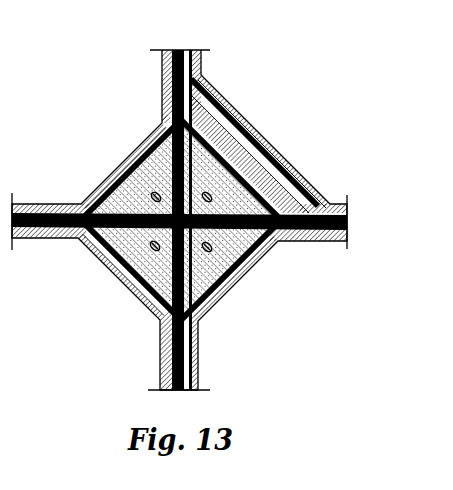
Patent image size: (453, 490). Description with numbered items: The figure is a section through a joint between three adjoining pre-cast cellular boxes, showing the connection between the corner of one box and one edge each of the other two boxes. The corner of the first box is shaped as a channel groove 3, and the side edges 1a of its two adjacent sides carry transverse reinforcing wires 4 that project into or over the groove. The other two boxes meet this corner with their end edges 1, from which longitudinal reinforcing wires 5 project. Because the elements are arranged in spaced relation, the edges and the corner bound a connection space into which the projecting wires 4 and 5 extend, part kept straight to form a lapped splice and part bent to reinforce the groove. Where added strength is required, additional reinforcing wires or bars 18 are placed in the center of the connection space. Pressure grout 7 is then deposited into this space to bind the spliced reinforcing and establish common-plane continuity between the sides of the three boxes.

The end edge 1 is at (104, 268).
The side edge 1a is at (162, 121).
The channel groove 3 is at (227, 115).
The transverse reinforcing wire 4 is at (163, 100).
The longitudinal reinforcing wire 5 is at (162, 346).
The pressure grout 7 is at (232, 282).
The reinforcing wire or bar 18 is at (132, 158).